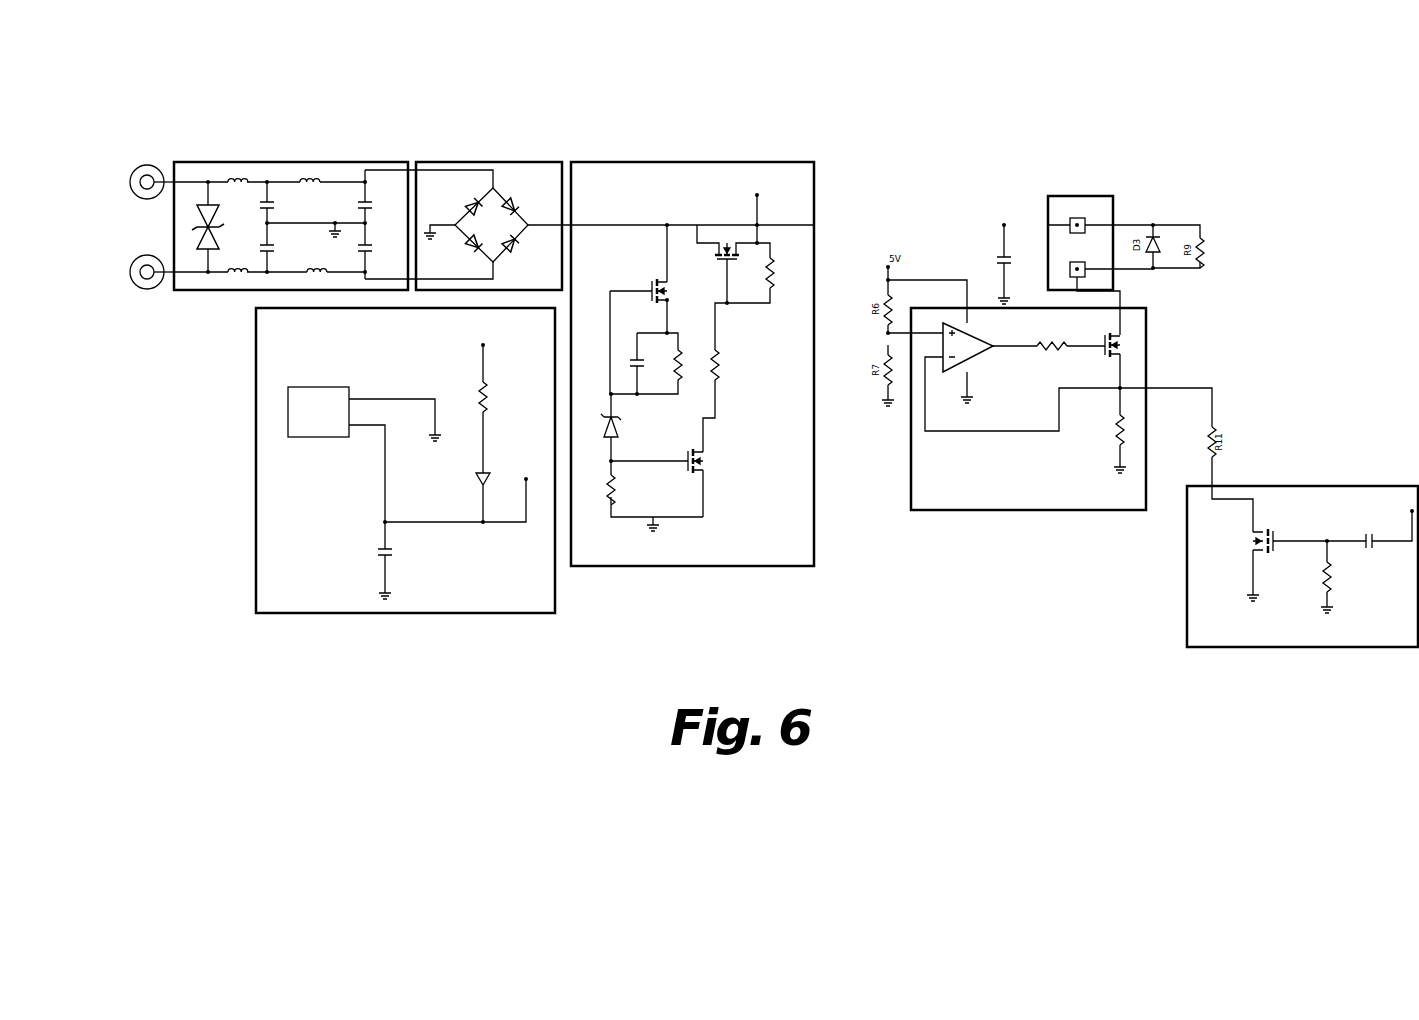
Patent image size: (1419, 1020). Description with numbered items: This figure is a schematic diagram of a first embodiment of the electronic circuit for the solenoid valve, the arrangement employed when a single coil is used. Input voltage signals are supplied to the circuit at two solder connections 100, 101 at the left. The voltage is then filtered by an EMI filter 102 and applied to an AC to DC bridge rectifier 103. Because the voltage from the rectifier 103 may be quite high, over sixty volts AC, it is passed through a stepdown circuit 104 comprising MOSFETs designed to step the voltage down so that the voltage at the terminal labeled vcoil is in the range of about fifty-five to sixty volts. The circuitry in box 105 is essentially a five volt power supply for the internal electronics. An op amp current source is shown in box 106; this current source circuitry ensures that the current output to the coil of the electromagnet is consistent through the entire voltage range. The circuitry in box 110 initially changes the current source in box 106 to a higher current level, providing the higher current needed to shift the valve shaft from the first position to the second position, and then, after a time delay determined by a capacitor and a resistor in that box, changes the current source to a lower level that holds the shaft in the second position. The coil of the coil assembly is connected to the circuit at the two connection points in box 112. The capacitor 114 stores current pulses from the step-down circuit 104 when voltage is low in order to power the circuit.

The solder connection 100 is at (140, 160).
The solder connection 101 is at (142, 290).
The EMI filter 102 is at (292, 162).
The AC to DC bridge rectifier 103 is at (491, 160).
The stepdown circuit 104 is at (693, 160).
The 5 volt power supply box 105 is at (407, 615).
The op amp current source box 106 is at (1027, 512).
The current level control circuitry box 110 is at (1303, 648).
The coil connection box 112 is at (1082, 193).
The capacitor 114 is at (998, 257).